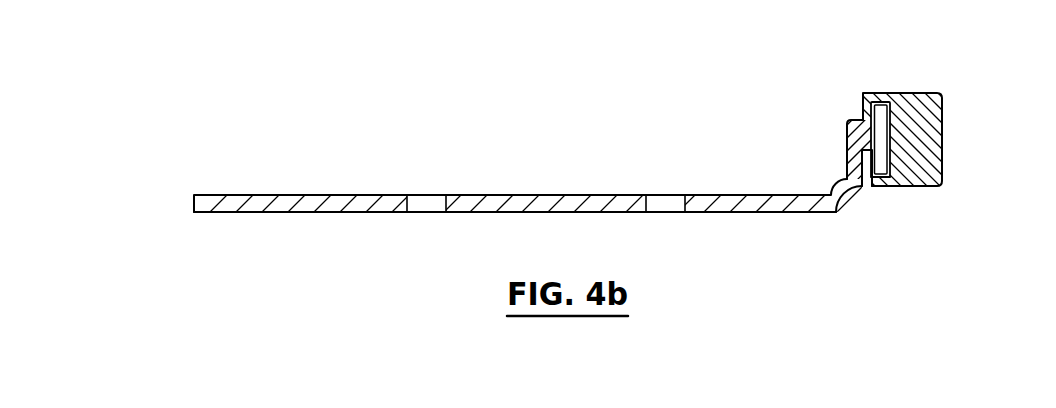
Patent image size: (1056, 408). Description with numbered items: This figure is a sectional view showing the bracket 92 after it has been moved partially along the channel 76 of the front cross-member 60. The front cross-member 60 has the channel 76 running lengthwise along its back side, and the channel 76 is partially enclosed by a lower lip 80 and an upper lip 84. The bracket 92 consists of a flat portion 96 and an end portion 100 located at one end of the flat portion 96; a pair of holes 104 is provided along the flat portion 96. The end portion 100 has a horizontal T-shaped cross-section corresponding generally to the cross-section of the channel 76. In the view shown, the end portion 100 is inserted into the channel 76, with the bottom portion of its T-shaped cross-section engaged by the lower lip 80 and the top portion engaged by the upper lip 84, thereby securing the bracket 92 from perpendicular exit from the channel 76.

The front cross-member 60 is at (947, 98).
The channel 76 is at (883, 178).
The lower lip 80 is at (864, 157).
The upper lip 84 is at (862, 93).
The bracket 92 is at (243, 185).
The flat portion 96 is at (355, 217).
The end portion 100 is at (845, 133).
The holes 104 is at (423, 203).